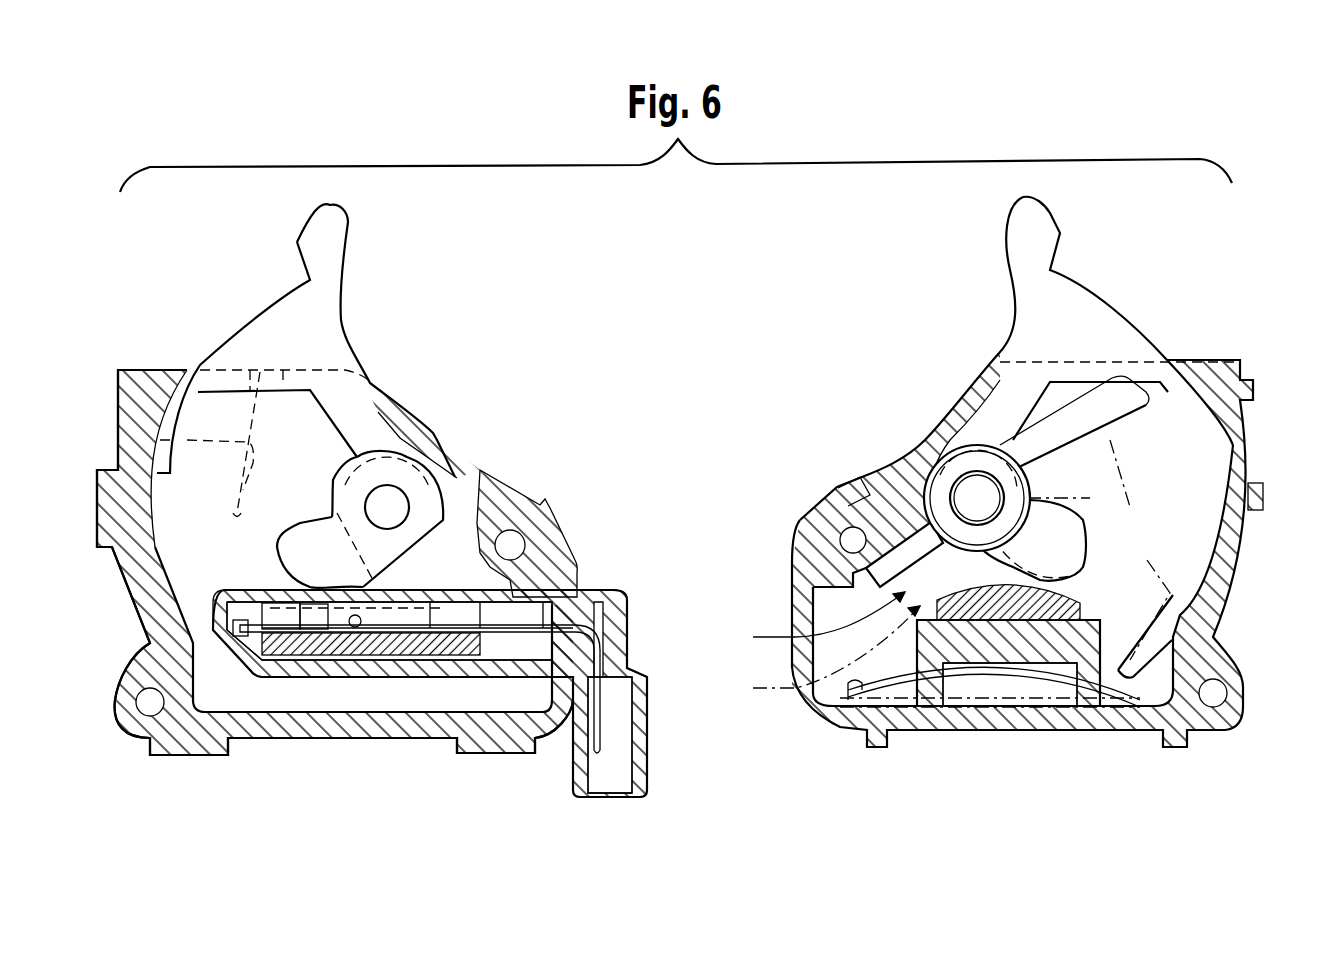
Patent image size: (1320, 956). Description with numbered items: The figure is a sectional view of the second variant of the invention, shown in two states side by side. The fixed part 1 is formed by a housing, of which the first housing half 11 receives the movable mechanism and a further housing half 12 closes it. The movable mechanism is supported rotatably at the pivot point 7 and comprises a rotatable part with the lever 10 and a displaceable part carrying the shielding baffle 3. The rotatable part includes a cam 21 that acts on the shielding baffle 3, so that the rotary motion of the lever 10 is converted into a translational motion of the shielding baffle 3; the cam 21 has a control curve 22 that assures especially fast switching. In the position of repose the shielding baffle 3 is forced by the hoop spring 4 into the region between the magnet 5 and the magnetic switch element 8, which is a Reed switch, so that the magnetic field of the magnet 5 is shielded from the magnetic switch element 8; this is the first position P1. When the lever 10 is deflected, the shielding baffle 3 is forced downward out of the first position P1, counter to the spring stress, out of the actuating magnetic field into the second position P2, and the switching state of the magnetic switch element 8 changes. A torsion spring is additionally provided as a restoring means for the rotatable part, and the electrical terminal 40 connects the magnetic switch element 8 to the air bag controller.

The fixed part 1 is at (500, 733).
The first housing half 11 is at (335, 562).
The shielding baffle 3 is at (1060, 594).
The hoop spring 4 is at (1023, 413).
The magnet 5 is at (1083, 630).
The pivot point 7 is at (392, 500).
The magnetic switch element 8 is at (322, 655).
The lever 10 is at (332, 260).
The housing half 12 is at (1213, 587).
The cam 21 is at (310, 527).
The control curve 22 is at (310, 560).
The electrical terminal 40 is at (610, 770).
The first position P1 is at (815, 622).
The second position P2 is at (822, 656).